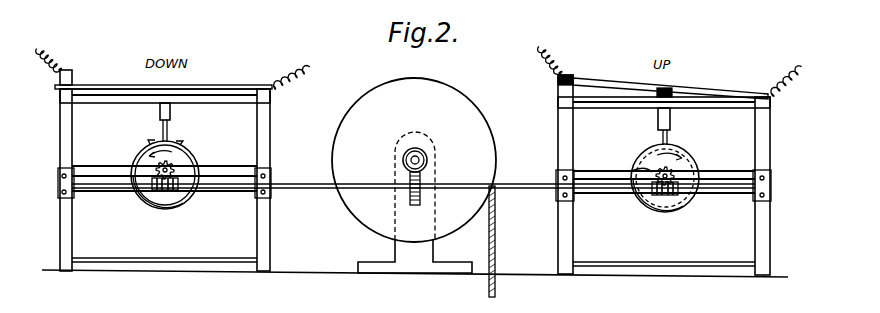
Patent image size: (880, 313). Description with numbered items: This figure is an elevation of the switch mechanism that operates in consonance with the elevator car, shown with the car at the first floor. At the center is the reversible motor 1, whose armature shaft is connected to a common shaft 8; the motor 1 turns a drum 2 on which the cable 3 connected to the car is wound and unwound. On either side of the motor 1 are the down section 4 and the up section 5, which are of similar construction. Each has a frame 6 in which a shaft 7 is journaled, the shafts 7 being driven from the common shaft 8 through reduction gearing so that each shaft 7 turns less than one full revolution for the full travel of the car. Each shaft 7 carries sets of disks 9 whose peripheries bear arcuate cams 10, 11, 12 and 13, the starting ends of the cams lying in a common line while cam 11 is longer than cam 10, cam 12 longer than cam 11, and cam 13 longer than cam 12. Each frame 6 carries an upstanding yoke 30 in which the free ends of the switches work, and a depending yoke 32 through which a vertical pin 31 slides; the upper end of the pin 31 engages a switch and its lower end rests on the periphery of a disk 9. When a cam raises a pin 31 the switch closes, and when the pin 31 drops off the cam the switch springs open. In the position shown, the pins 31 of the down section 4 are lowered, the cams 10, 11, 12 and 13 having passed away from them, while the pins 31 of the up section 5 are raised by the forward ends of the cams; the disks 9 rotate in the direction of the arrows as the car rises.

The reversible motor 1 is at (423, 152).
The drum 2 is at (345, 121).
The cable 3 is at (495, 291).
The down section 4 is at (217, 82).
The up section 5 is at (619, 83).
The frame 6 is at (268, 243).
The shaft 7 is at (176, 168).
The common shaft 8 is at (288, 185).
The disks 9 is at (184, 198).
The arcuate cam 10 is at (645, 169).
The arcuate cam 11 is at (140, 200).
The arcuate cam 12 is at (158, 208).
The arcuate cam 13 is at (178, 176).
The upstanding yoke 30 is at (74, 76).
The vertical pin 31 is at (170, 130).
The depending yoke 32 is at (171, 112).